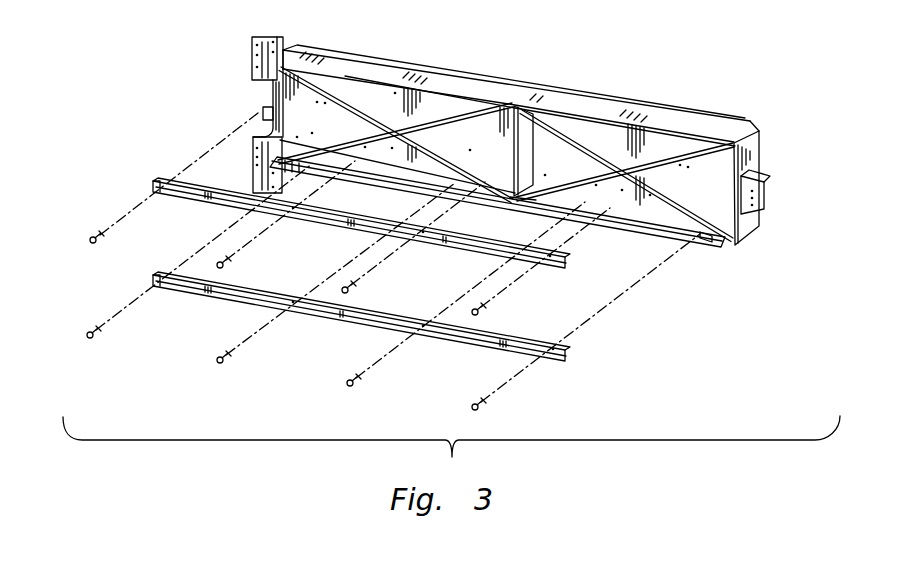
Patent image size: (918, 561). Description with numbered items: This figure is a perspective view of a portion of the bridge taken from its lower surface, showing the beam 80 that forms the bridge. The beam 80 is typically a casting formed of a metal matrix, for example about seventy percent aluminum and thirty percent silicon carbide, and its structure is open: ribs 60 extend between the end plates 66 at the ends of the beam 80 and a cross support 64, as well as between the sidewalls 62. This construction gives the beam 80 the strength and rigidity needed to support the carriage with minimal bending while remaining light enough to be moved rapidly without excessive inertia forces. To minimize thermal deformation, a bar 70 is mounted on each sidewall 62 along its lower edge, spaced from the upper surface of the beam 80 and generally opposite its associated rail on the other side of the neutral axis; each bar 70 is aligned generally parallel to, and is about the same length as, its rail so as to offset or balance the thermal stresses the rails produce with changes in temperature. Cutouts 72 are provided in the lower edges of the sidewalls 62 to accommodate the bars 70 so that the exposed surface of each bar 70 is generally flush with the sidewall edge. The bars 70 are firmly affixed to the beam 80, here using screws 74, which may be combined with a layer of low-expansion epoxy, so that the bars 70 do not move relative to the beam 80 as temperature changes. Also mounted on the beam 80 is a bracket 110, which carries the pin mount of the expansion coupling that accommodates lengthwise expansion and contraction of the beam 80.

The ribs 60 is at (441, 145).
The sidewalls 62 is at (662, 120).
The cross support 64 is at (522, 135).
The end plates 66 is at (274, 93).
The bar 70 is at (162, 177).
The cutouts 72 is at (313, 72).
The screws 74 is at (93, 244).
The beam 80 is at (568, 82).
The bracket 110 is at (764, 177).